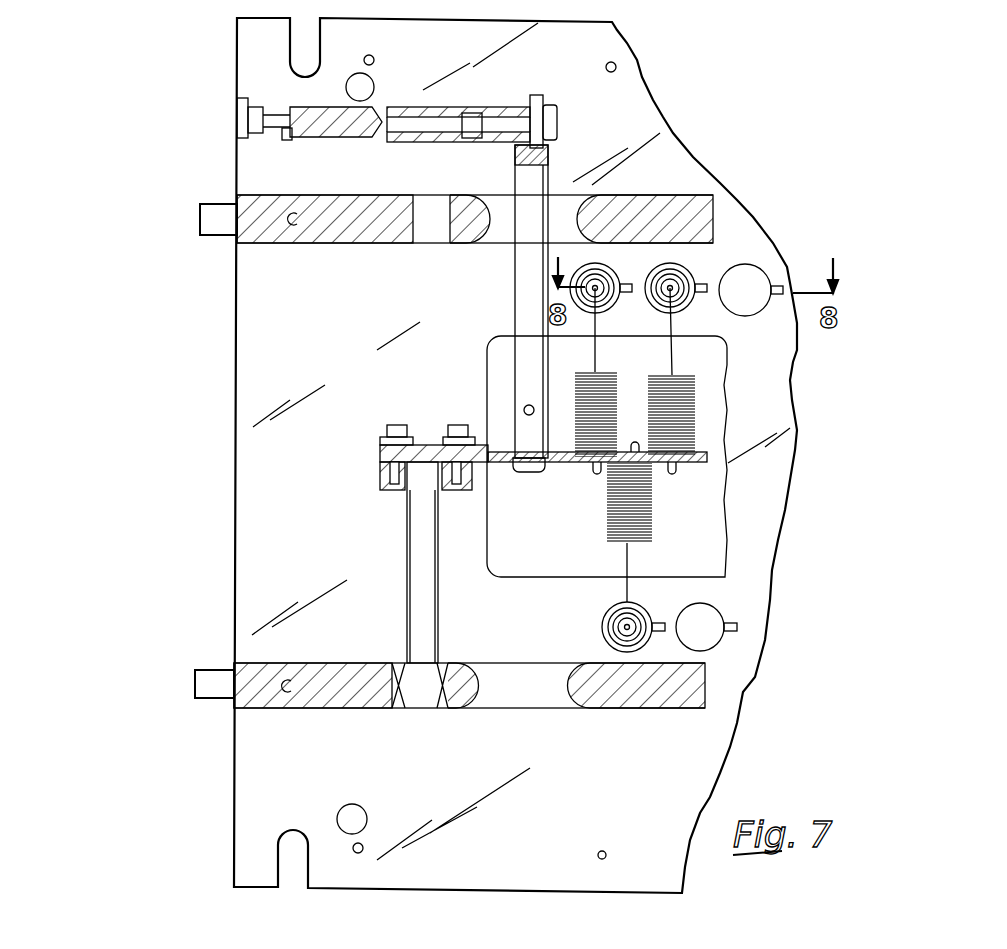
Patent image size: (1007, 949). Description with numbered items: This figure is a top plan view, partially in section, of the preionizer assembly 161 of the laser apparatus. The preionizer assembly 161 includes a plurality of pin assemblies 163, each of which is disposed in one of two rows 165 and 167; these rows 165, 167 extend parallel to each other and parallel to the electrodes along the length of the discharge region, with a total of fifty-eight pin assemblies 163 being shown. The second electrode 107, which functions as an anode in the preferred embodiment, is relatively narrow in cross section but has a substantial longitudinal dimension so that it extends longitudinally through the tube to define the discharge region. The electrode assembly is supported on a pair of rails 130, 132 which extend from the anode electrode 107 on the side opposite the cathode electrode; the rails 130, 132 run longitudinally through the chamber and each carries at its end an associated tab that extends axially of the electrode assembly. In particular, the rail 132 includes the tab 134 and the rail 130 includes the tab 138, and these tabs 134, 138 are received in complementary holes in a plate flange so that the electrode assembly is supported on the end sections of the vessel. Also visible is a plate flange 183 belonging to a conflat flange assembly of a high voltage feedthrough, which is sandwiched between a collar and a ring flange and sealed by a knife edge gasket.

The second electrode 107 is at (252, 445).
The rail 130 is at (265, 232).
The rail 132 is at (262, 697).
The tab 134 is at (205, 672).
The tab 138 is at (200, 205).
The preionizer assembly 161 is at (278, 373).
The pin assemblies 163 is at (628, 266).
The row 165 is at (505, 302).
The row 167 is at (582, 626).
The plate flange 183 is at (237, 120).